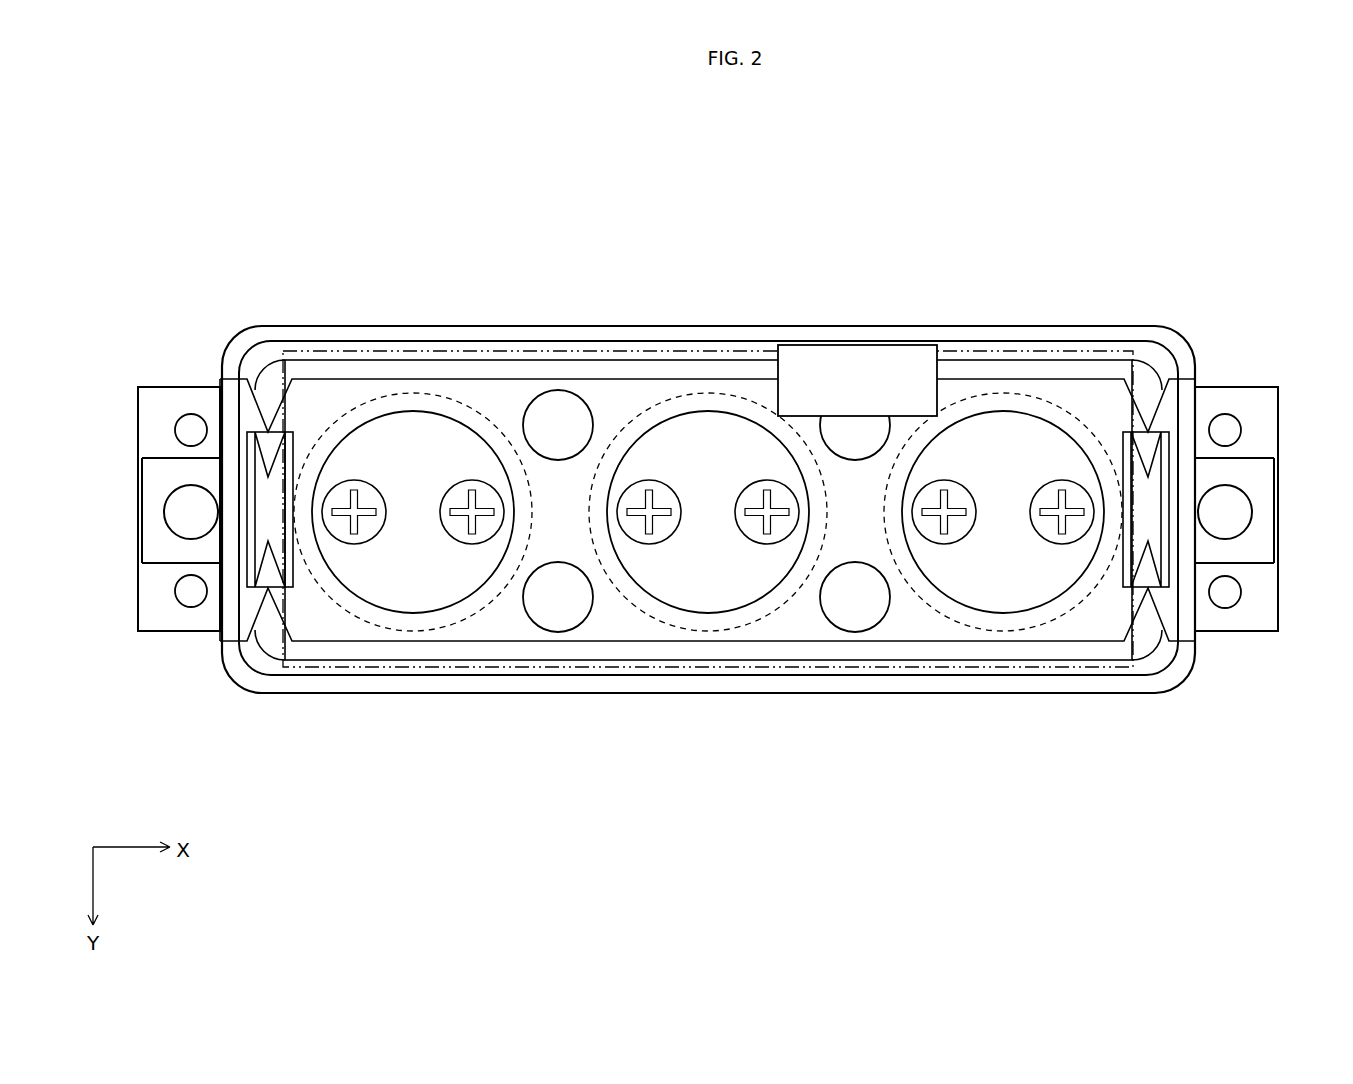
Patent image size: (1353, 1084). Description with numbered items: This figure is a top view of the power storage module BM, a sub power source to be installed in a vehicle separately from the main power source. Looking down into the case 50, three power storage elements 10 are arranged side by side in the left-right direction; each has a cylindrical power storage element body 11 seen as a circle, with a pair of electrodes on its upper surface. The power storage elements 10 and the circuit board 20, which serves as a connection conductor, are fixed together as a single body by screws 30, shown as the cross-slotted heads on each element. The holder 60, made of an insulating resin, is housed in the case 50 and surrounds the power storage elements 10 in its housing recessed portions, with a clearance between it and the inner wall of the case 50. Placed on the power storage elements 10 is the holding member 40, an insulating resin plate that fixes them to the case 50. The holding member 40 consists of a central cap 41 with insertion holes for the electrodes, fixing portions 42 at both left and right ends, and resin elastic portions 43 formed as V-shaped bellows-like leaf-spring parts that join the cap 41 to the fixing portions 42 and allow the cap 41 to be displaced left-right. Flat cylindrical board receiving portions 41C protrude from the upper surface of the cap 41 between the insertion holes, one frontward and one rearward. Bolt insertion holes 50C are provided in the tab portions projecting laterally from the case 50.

The power storage module BM is at (1002, 109).
The power storage element 10 is at (428, 435).
The power storage element body 11 is at (708, 512).
The circuit board 20 is at (356, 350).
The screw 30 is at (967, 497).
The holding member 40 is at (568, 187).
The cap 41 is at (613, 400).
The board receiving portion 41C is at (555, 607).
The fixing portion 42 is at (150, 473).
The resin elastic portion 43 is at (259, 427).
The case 50 is at (808, 344).
The bolt insertion hole 50C is at (164, 403).
The holder 60 is at (1157, 367).